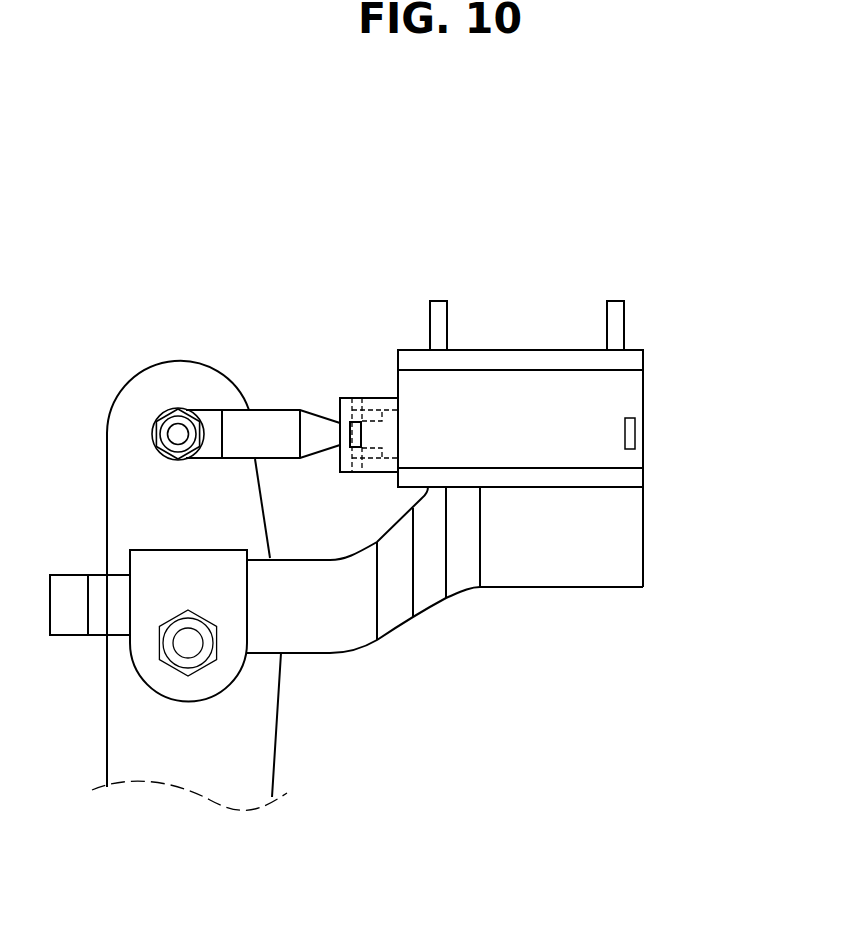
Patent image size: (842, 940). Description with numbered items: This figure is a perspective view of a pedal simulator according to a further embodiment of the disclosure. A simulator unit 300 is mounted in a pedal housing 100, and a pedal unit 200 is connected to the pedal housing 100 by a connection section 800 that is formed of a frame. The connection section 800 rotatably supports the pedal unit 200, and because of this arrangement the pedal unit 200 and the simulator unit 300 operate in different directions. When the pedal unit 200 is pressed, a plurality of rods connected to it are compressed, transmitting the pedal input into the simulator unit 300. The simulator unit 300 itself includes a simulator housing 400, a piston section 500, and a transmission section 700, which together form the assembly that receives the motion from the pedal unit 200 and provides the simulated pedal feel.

The pedal housing 100 is at (497, 393).
The pedal unit 200 is at (250, 732).
The simulator unit 300 is at (310, 238).
The simulator housing 400 is at (378, 397).
The piston section 500 is at (255, 432).
The transmission section 700 is at (180, 432).
The connection section 800 is at (538, 553).